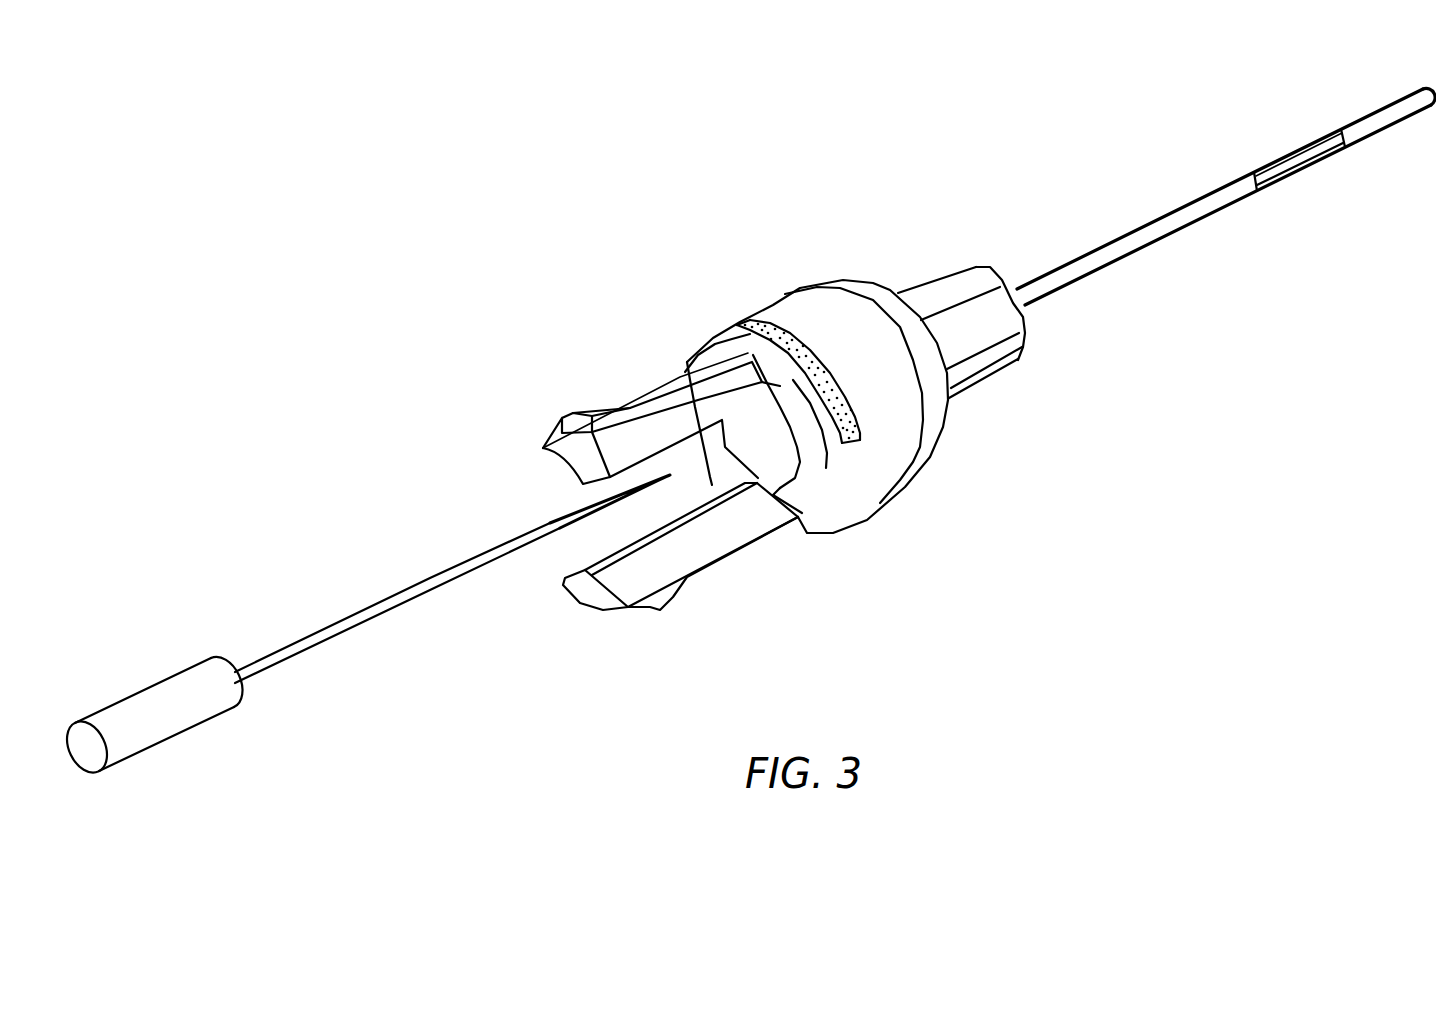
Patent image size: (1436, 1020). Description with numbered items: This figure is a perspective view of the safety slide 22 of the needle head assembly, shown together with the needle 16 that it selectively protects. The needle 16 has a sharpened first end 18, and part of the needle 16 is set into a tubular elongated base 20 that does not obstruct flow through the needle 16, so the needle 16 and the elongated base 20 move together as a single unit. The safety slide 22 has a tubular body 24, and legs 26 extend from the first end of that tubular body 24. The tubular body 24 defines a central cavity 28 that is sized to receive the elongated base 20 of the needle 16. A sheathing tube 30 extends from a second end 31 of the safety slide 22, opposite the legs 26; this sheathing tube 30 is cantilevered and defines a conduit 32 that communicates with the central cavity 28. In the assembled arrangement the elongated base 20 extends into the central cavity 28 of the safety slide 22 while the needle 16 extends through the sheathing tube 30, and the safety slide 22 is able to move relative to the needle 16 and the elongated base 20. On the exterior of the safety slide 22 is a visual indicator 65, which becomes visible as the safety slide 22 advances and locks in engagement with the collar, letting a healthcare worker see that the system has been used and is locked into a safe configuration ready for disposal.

The needle 16 is at (383, 607).
The sharpened first end 18 is at (652, 478).
The elongated base 20 is at (152, 707).
The safety slide 22 is at (835, 262).
The tubular body 24 is at (870, 477).
The legs 26 is at (653, 400).
The central cavity 28 is at (773, 453).
The sheathing tube 30 is at (1108, 250).
The second end 31 is at (1028, 313).
The conduit 32 is at (1323, 147).
The visual indicator 65 is at (770, 325).